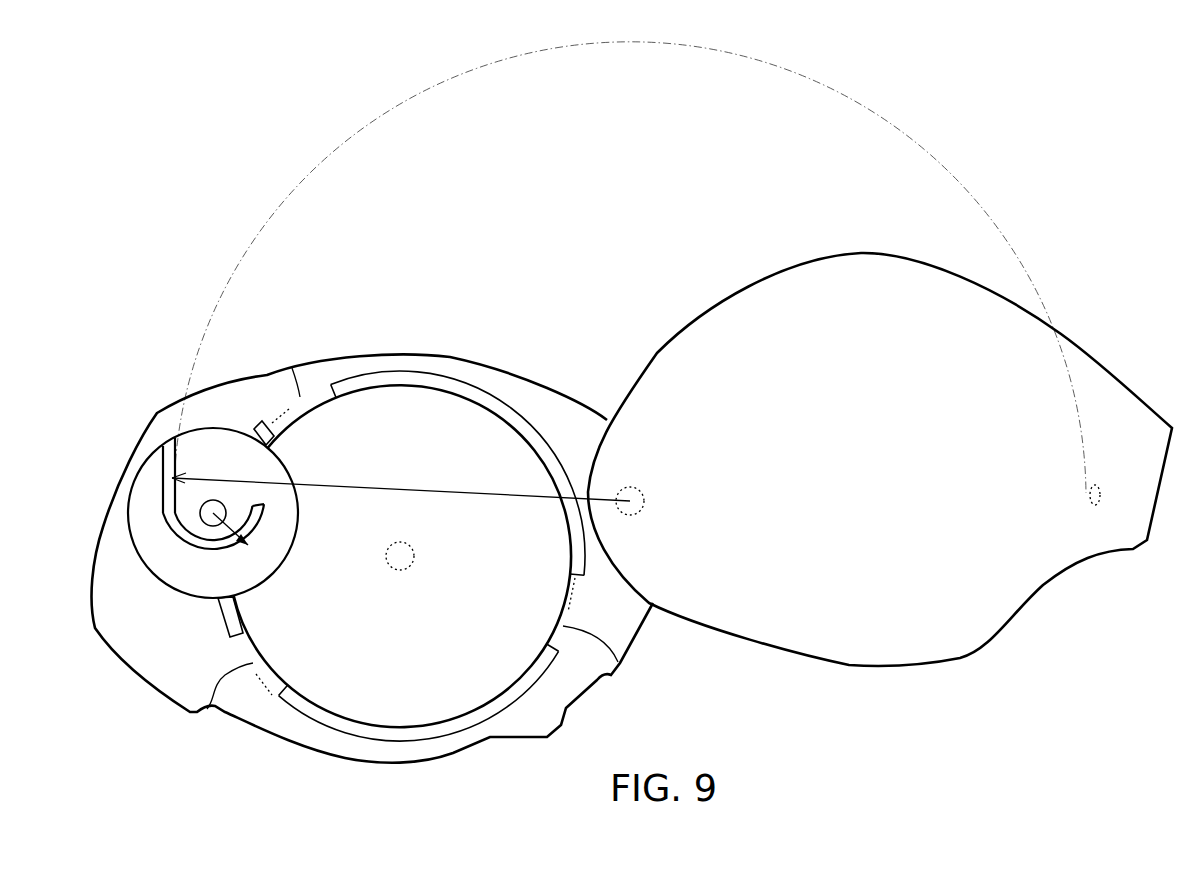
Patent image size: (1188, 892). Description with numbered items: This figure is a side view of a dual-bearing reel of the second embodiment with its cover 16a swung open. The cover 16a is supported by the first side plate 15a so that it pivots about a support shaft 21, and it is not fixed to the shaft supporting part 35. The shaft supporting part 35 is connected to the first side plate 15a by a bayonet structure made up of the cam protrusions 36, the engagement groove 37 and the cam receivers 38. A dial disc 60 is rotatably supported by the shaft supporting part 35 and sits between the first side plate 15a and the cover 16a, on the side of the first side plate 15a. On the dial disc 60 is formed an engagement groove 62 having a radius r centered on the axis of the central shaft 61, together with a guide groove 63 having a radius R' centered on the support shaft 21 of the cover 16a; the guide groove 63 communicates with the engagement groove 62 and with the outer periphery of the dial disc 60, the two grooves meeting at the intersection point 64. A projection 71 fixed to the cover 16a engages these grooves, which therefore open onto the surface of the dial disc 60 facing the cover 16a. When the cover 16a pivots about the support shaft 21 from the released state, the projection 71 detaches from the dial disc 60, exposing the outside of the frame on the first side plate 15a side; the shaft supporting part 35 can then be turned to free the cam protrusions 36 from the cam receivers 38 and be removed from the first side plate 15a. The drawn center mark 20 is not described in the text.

The first side plate 15a is at (163, 405).
The cover 16a is at (797, 262).
The lens center 20 is at (410, 566).
The support shaft 21 is at (637, 489).
The shaft supporting part 35 is at (430, 385).
The cam protrusions 36 is at (277, 407).
The engagement groove 37 is at (523, 428).
The cam receivers 38 is at (292, 368).
The dial disc 60 is at (213, 428).
The central shaft 61 is at (183, 528).
The engagement groove 62 is at (207, 523).
The guide groove 63 is at (165, 455).
The intersection point 64 is at (165, 512).
The projection 71 is at (1097, 508).
The radius r is at (220, 523).
The radius R' is at (401, 408).